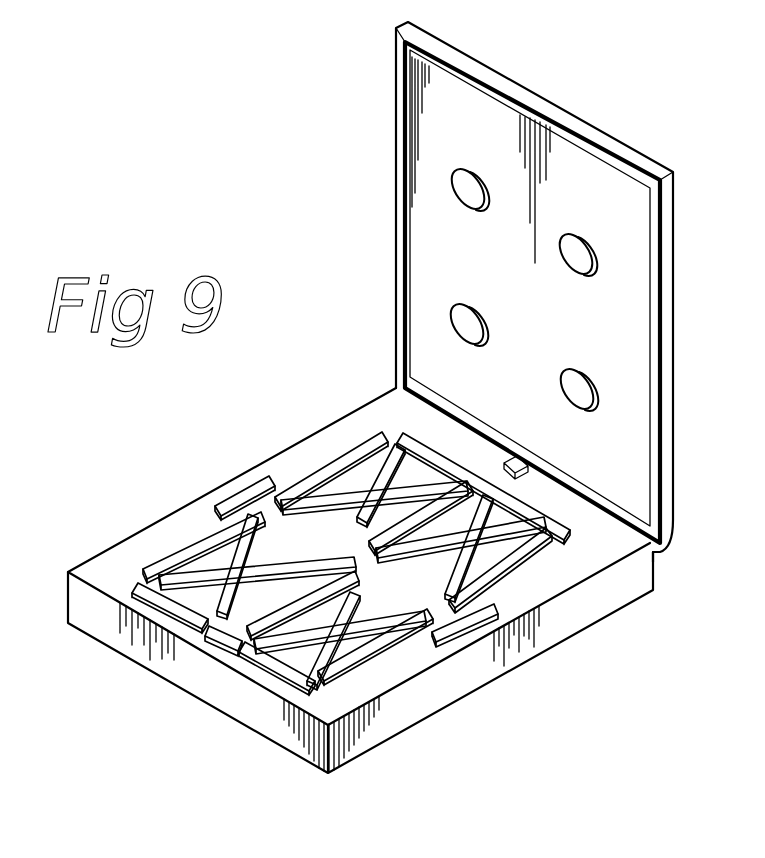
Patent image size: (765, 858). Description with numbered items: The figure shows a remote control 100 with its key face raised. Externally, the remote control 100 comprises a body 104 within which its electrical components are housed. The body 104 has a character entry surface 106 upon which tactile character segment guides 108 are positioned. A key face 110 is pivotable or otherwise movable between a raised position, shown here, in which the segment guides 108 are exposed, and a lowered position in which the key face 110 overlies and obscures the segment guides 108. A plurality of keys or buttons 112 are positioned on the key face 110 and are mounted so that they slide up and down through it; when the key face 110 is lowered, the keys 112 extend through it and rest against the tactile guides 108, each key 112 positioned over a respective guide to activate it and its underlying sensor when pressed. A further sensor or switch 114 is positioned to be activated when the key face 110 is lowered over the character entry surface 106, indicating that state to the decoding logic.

The remote control 100 is at (265, 216).
The body 104 is at (582, 607).
The character entry surface 106 is at (178, 528).
The tactile character segment guides 108 is at (303, 471).
The key face 110 is at (428, 266).
The keys 112 is at (572, 399).
The sensor 114 is at (523, 462).